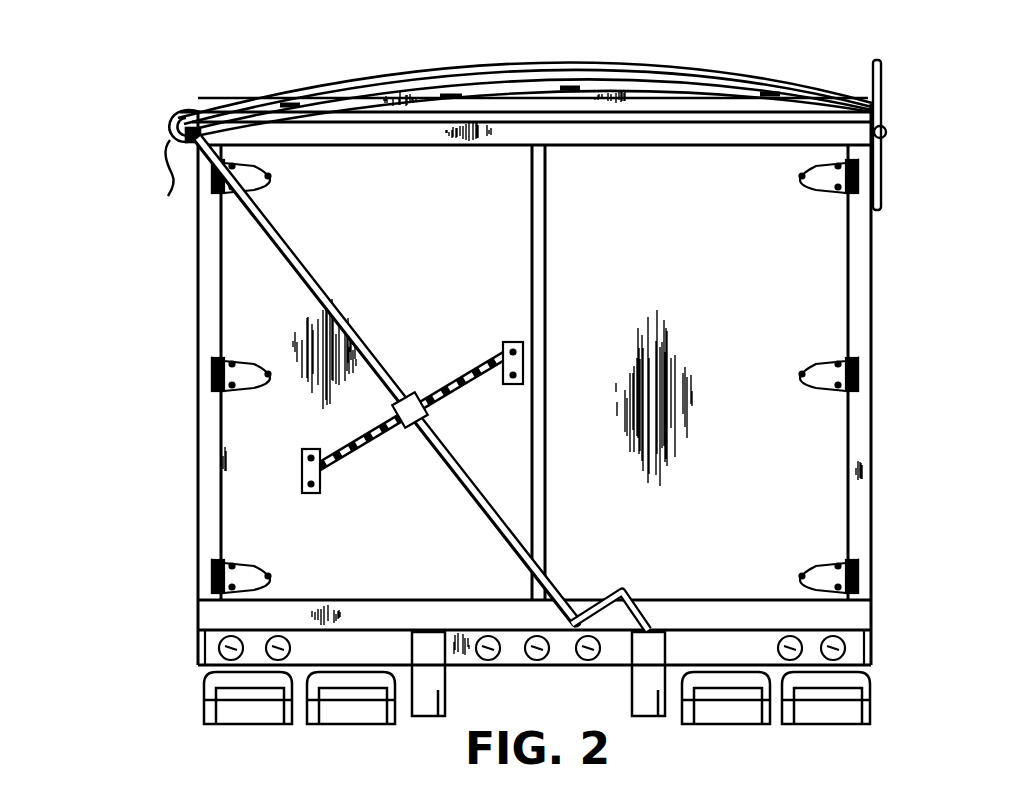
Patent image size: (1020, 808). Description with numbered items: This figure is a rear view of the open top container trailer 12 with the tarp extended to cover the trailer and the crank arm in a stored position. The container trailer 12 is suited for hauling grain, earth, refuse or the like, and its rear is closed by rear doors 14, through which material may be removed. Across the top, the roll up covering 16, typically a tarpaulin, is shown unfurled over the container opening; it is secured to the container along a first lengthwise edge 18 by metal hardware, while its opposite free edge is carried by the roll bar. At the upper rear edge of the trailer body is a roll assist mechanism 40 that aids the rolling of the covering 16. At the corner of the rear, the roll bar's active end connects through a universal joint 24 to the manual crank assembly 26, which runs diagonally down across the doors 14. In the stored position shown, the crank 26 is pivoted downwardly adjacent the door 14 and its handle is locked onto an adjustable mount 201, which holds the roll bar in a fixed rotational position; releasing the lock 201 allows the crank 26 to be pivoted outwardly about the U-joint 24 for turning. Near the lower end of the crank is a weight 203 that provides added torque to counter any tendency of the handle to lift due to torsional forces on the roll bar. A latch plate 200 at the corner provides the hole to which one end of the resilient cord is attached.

The open top container trailer 12 is at (880, 257).
The rear doors 14 is at (242, 283).
The roll up covering 16 is at (563, 69).
The first lengthwise edge 18 is at (868, 102).
The universal joint 24 is at (168, 142).
The manual crank assembly 26 is at (318, 283).
The roll assist mechanism 40 is at (603, 104).
The latch plate 200 is at (186, 118).
The adjustable mount 201 is at (415, 392).
The weight 203 is at (631, 595).